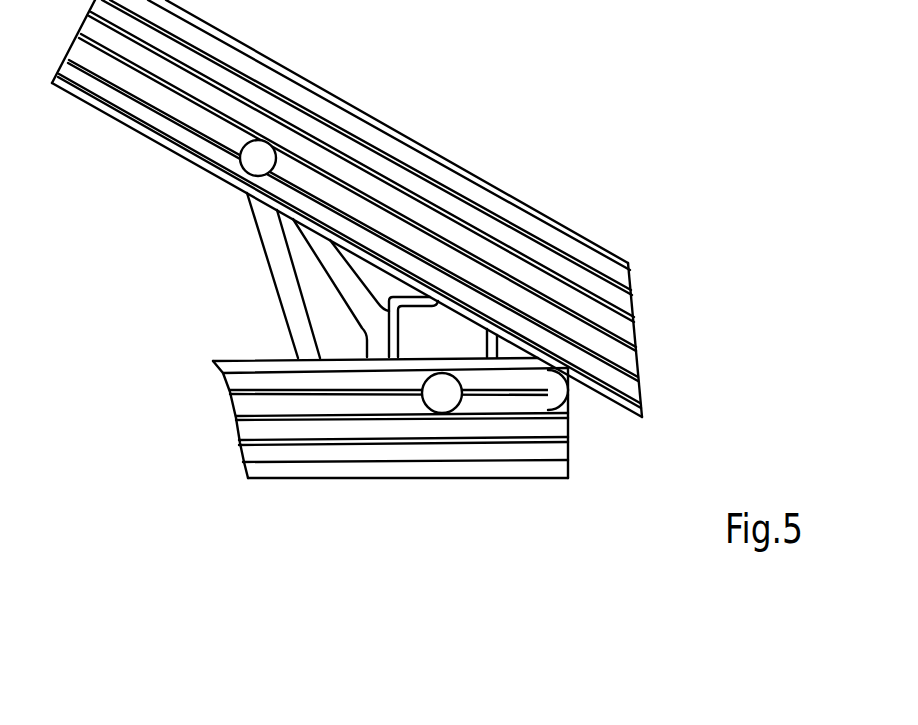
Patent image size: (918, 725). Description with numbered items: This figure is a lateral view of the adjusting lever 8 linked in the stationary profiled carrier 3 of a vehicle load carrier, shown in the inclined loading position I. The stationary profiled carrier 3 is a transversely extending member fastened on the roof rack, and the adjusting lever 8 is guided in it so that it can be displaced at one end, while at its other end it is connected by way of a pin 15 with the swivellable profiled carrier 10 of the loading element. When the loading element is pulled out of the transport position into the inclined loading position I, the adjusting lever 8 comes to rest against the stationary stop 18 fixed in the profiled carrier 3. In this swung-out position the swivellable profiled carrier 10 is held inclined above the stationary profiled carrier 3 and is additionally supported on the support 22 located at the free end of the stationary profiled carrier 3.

The inclined loading position I is at (417, 108).
The swivellable profiled carrier 10 is at (445, 162).
The pin 15 is at (252, 162).
The adjusting lever 8 is at (264, 248).
The stationary stop 18 is at (408, 327).
The profiled carrier 3 is at (407, 472).
The support 22 is at (568, 412).